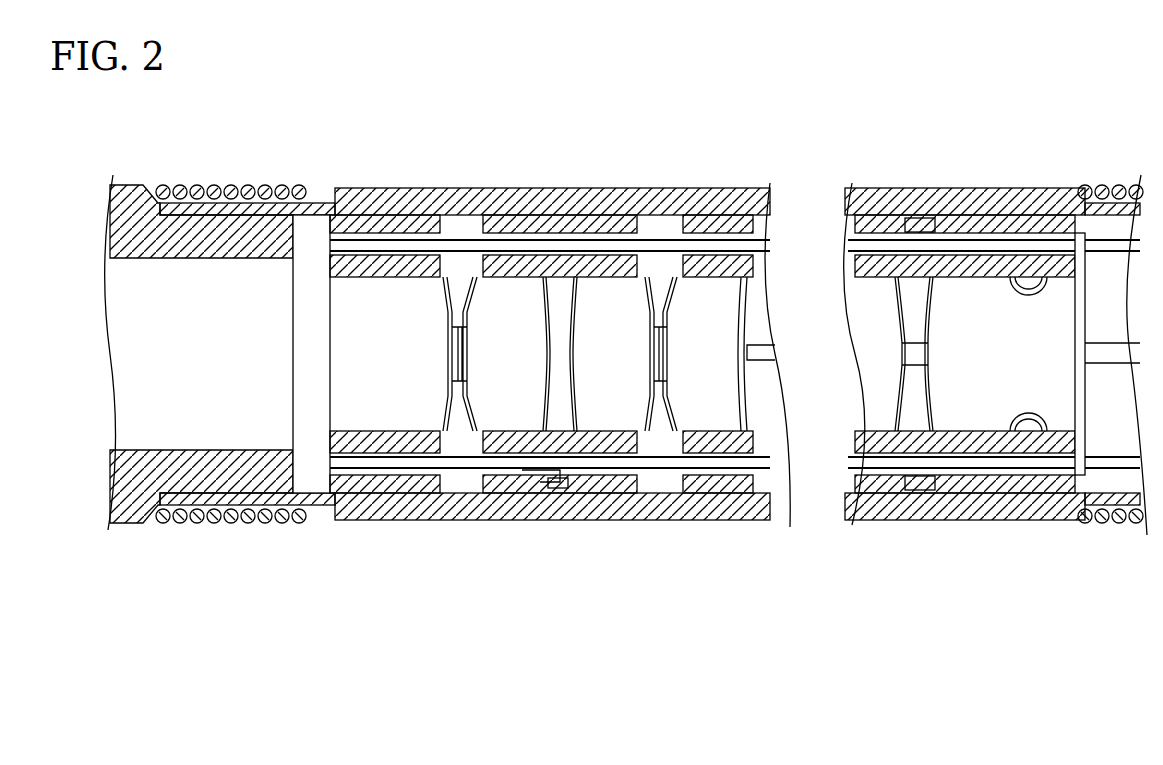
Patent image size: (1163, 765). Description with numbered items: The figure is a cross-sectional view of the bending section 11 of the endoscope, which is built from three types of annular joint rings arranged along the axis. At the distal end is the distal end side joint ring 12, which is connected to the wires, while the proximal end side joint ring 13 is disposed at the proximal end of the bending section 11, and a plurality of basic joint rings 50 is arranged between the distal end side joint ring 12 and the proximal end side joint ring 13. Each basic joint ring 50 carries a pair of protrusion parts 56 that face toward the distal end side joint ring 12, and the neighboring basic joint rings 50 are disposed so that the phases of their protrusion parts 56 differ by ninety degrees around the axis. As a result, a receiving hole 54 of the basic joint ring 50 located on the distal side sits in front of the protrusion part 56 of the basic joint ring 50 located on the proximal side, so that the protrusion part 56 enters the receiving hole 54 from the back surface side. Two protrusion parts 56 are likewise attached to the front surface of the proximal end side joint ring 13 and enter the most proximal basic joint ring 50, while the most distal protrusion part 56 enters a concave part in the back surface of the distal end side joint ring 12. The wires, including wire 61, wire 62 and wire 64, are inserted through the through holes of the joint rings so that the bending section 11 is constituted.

The bending section 11 is at (626, 383).
The distal end side joint ring 12 is at (380, 303).
The proximal end side joint ring 13 is at (985, 345).
The basic joint ring 50 is at (510, 307).
The receiving hole 54 is at (540, 474).
The protrusion part 56 is at (558, 485).
The wire 61 is at (968, 240).
The wire 62 is at (612, 464).
The wire 64 is at (557, 357).